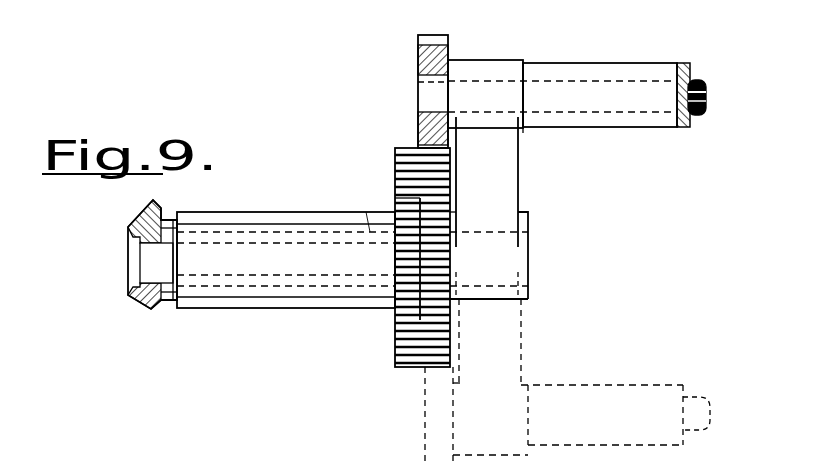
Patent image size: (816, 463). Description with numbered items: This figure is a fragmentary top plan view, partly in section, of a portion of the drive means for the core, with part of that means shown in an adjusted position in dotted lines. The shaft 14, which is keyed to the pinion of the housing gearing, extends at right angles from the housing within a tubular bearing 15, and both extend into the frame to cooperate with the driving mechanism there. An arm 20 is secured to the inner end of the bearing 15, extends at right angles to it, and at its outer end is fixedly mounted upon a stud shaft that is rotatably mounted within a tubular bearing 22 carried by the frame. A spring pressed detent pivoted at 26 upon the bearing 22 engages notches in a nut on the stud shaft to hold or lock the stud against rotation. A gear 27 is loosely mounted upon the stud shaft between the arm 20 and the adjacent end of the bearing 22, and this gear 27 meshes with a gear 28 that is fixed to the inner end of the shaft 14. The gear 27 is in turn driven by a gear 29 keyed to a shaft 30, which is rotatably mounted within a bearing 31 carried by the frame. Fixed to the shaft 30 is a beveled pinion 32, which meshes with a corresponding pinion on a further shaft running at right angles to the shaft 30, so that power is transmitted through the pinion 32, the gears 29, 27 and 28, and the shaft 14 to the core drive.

The shaft 14 is at (697, 112).
The tubular bearing 15 is at (585, 68).
The arm 20 is at (512, 181).
The tubular bearing 22 is at (338, 298).
The pivot 26 is at (518, 265).
The gear 27 is at (395, 165).
The gear 28 is at (452, 50).
The gear 29 is at (394, 300).
The shaft 30 is at (150, 271).
The bearing 31 is at (283, 284).
The beveled pinion 32 is at (144, 304).